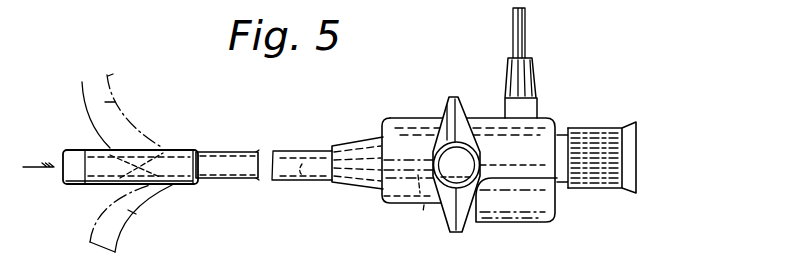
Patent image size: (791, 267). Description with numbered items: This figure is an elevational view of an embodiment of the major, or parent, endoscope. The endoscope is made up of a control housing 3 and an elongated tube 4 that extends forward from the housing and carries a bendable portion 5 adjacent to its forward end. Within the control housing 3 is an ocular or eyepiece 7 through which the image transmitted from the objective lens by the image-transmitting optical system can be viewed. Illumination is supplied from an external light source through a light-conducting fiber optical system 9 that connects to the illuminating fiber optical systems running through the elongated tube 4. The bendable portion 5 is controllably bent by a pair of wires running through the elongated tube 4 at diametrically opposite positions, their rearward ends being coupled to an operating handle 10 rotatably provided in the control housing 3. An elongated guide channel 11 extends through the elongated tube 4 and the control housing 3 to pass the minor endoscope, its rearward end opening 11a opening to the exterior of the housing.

The control housing 3 is at (397, 128).
The elongated tube 4 is at (222, 160).
The bendable portion 5 is at (150, 226).
The ocular or eyepiece 7 is at (598, 128).
The light-conducting fiber optical system 9 is at (518, 38).
The operating handle 10 is at (462, 97).
The guide channel 11 is at (313, 185).
The rearward end opening 11a is at (424, 212).